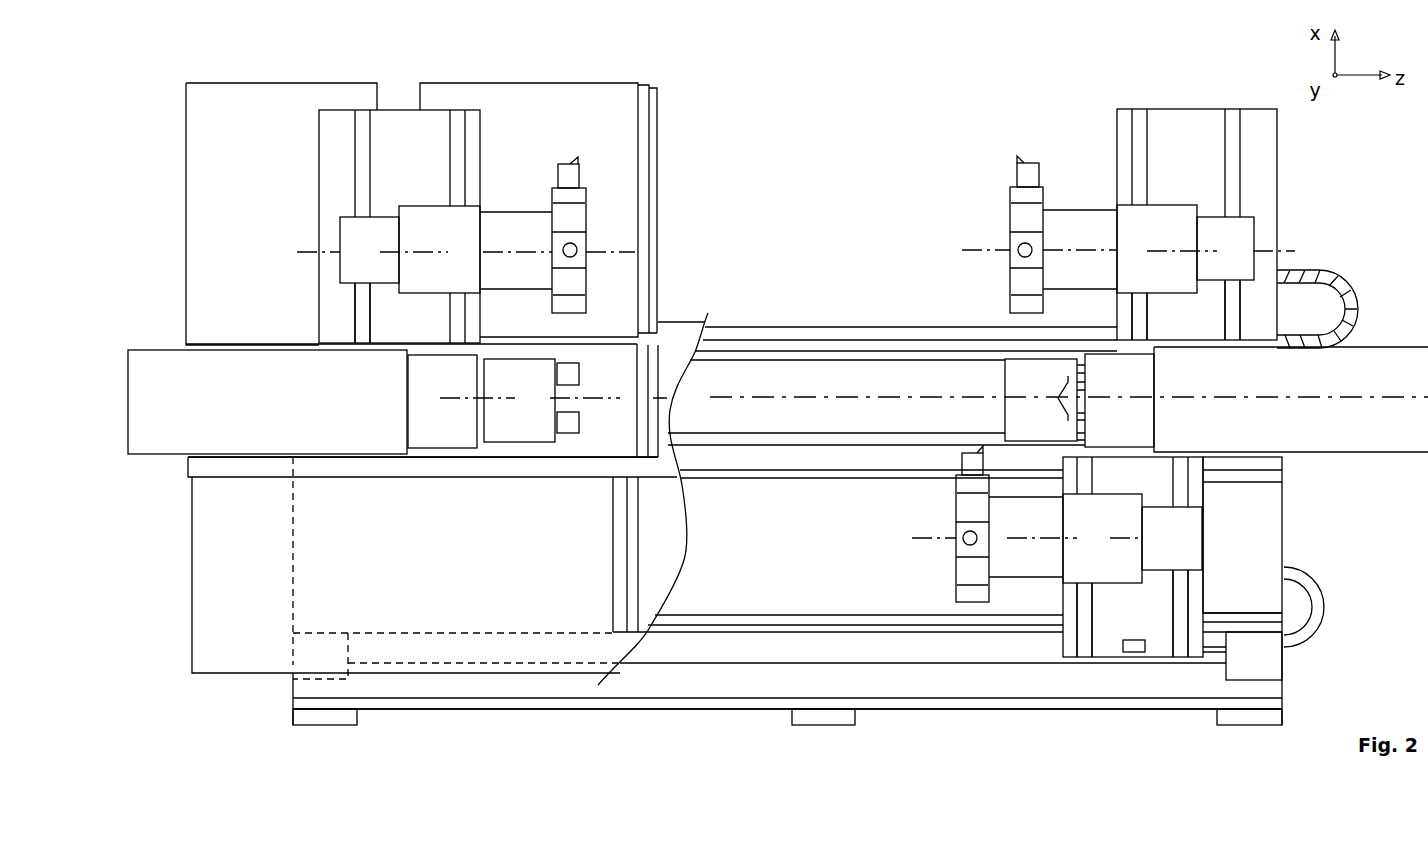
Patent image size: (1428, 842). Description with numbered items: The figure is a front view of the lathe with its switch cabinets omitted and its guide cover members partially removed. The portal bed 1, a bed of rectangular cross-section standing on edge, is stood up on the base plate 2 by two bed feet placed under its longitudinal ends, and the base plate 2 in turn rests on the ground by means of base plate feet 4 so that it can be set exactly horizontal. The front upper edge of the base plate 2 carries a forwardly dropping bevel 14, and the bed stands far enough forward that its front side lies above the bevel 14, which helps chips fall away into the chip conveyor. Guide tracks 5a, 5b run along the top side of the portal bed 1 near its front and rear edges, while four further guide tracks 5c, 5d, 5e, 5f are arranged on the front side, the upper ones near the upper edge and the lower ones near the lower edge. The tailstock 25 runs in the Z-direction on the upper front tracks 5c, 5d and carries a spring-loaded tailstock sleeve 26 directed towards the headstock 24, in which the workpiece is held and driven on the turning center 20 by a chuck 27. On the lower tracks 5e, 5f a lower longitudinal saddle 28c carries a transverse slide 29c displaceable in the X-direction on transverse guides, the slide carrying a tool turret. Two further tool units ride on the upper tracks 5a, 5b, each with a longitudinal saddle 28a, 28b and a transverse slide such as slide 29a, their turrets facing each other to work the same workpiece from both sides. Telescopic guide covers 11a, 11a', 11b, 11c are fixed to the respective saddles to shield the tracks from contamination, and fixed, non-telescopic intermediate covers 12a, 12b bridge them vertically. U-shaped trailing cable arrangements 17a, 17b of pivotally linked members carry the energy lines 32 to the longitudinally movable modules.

The portal bed 1 is at (1308, 497).
The base plate 2 is at (925, 703).
The base plate feet 4 is at (787, 718).
The guide track 5a is at (910, 313).
The guide track 5b is at (810, 327).
The guide track 5c is at (832, 362).
The guide track 5d is at (860, 433).
The guide track 5e is at (800, 478).
The guide track 5f is at (813, 613).
The guide cover 11a is at (562, 210).
The guide cover 11a' is at (281, 214).
The guide cover 11b is at (431, 410).
The guide cover 11c is at (423, 565).
The intermediate cover 12a is at (675, 332).
The intermediate cover 12b is at (507, 457).
The bevel 14 is at (787, 694).
The trailing cable arrangement 17a is at (1317, 590).
The trailing cable arrangement 17b is at (1325, 277).
The turning center 20 is at (712, 398).
The headstock 24 is at (267, 402).
The tailstock 25 is at (1291, 399).
The tailstock sleeve 26 is at (1079, 400).
The chuck 27 is at (531, 400).
The longitudinal slide or saddle 28a is at (466, 226).
The longitudinal slide or saddle 28b is at (1206, 224).
The longitudinal slide or saddle 28c is at (1172, 591).
The transverse slide 29a is at (369, 250).
The transverse slide 29c is at (1172, 539).
The energy line 32 is at (1133, 647).